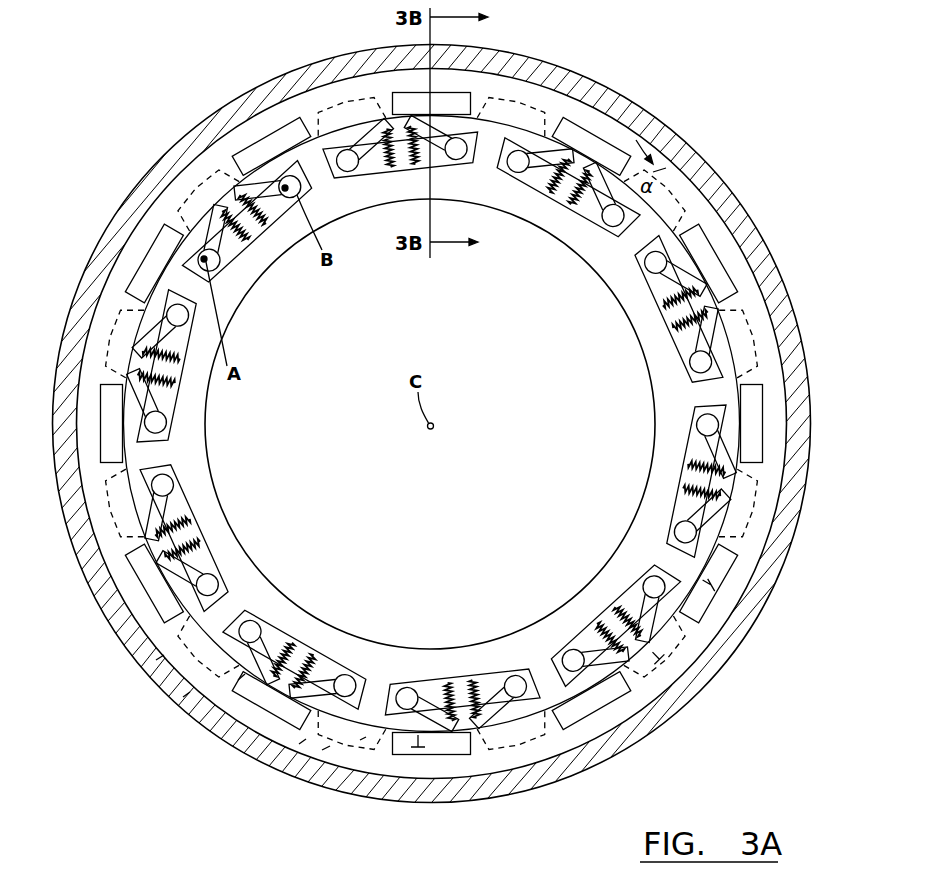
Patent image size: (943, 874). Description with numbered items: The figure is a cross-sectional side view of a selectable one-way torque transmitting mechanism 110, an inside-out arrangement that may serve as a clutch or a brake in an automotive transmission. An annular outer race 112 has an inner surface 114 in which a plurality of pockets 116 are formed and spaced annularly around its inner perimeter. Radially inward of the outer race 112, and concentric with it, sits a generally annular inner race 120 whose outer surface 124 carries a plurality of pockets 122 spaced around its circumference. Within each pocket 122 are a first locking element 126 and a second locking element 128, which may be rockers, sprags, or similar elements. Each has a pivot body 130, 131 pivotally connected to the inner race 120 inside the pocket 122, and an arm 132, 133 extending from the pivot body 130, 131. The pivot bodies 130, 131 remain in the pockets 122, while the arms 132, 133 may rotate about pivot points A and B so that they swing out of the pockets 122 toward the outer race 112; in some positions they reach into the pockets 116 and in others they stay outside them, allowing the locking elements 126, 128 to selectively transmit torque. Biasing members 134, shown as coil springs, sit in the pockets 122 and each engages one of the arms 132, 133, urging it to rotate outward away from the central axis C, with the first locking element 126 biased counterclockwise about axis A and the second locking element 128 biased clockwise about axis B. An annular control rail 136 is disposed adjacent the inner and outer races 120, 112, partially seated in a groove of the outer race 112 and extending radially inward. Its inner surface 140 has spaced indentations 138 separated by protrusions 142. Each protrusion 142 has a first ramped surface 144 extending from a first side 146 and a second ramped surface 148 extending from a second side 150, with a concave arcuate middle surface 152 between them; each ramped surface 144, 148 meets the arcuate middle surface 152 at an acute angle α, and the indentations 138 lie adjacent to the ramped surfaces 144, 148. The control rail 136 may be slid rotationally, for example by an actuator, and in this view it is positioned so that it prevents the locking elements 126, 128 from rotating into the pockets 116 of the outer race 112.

The selectable one-way torque transmitting mechanism 110 is at (739, 71).
The outer race 112 is at (725, 661).
The inner surface 114 is at (363, 738).
The pockets 116 is at (418, 735).
The inner race 120 is at (265, 578).
The pockets 122 is at (177, 545).
The outer surface 124 is at (160, 658).
The first locking element 126 is at (496, 693).
The second locking element 128 is at (424, 700).
The pivot body 130 is at (208, 272).
The pivot body 131 is at (289, 192).
The arm 132 is at (214, 264).
The arm 133 is at (250, 218).
The biasing members 134 is at (642, 645).
The control rail 136 is at (714, 268).
The indentations 138 is at (659, 661).
The inner surface 140 is at (294, 677).
The protrusions 142 is at (451, 749).
The first ramped surface 144 is at (326, 748).
The first side 146 is at (302, 742).
The second ramped surface 148 is at (186, 694).
The second side 150 is at (241, 677).
The concave arcuate middle surface 152 is at (640, 205).